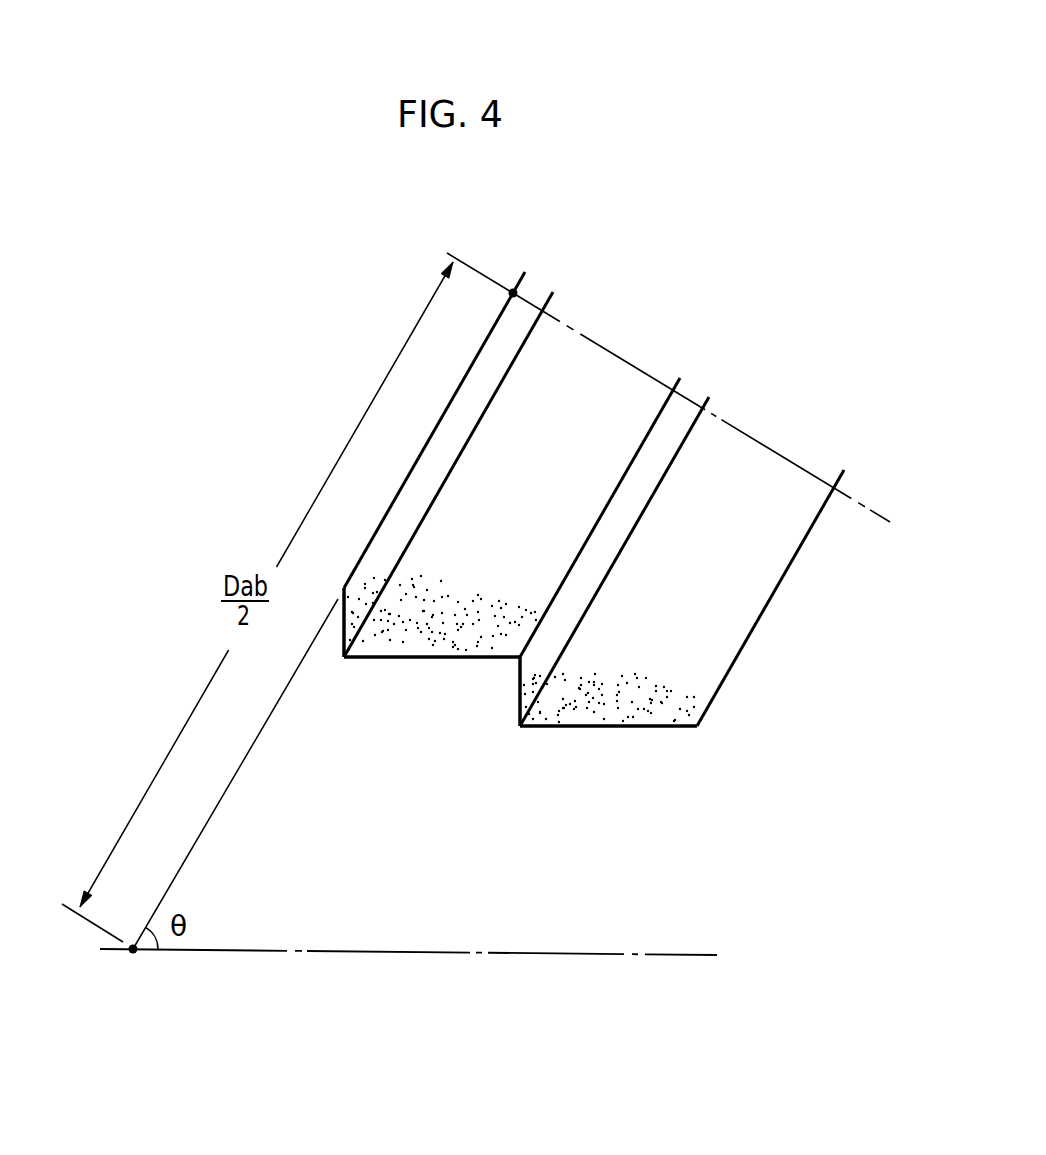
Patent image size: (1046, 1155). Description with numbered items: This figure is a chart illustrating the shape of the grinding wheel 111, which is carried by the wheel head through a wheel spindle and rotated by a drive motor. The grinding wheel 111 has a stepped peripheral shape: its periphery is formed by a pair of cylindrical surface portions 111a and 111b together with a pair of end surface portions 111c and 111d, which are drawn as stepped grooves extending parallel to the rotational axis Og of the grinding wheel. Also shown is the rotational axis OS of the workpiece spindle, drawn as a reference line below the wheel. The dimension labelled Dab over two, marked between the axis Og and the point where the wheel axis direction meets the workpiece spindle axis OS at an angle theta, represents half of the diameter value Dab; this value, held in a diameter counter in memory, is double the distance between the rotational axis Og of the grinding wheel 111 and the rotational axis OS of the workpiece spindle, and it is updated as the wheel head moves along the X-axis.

The grinding wheel 111 is at (762, 602).
The cylindrical surface portion 111a is at (677, 730).
The cylindrical surface portion 111b is at (416, 660).
The end surface portion 111c is at (518, 703).
The end surface portion 111d is at (344, 658).
The rotational axis of the grinding wheel Og is at (610, 353).
The rotational axis of the workpiece spindle OS is at (688, 953).